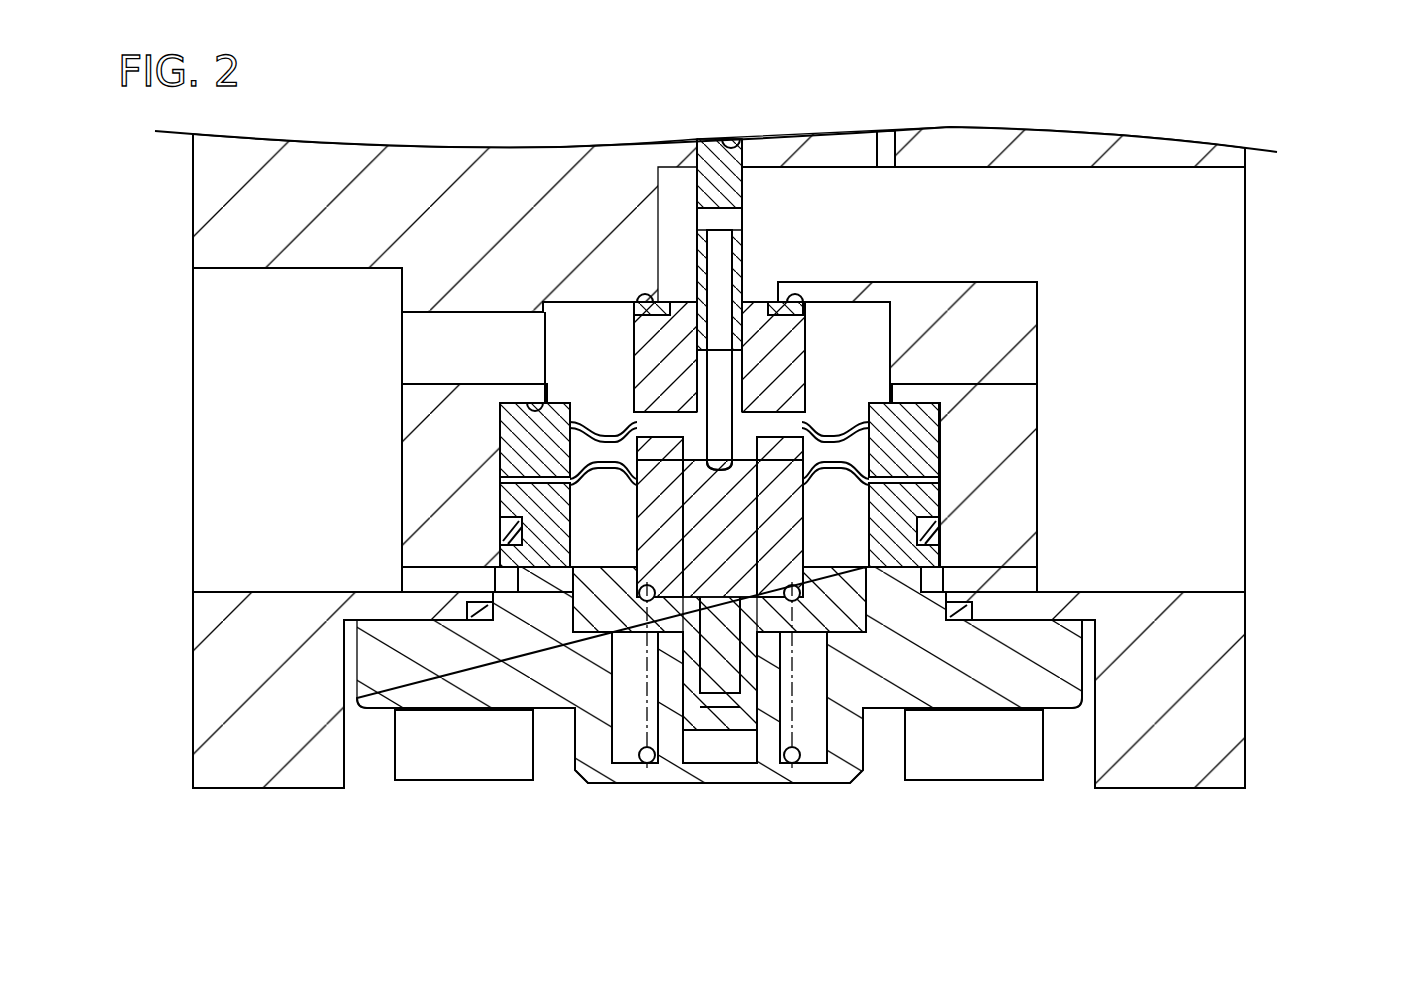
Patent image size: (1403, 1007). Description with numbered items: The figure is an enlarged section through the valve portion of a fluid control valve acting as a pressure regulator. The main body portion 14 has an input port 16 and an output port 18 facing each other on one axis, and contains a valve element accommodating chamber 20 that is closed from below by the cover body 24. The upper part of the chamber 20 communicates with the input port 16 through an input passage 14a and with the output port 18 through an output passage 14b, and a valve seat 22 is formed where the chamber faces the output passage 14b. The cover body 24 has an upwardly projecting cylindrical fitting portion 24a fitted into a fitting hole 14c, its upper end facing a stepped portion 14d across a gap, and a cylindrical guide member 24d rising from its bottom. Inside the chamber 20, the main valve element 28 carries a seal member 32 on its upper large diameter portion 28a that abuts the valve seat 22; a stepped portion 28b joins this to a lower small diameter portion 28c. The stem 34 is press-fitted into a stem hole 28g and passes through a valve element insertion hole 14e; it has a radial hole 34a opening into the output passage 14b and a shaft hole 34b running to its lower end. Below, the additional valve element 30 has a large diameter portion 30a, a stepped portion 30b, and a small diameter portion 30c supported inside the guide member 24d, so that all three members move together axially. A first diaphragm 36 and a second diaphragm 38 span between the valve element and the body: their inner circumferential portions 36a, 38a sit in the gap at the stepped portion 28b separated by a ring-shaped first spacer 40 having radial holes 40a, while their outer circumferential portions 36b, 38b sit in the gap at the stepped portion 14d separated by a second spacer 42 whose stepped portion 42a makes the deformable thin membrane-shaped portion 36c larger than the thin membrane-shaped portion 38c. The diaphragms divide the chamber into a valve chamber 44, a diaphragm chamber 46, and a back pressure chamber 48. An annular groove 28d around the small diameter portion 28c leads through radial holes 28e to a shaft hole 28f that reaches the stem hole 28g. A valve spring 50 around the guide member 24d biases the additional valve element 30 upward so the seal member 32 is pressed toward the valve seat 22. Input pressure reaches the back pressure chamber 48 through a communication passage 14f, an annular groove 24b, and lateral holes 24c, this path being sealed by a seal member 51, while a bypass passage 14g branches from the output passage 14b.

The main body portion 14 is at (1252, 214).
The input passage 14a is at (445, 343).
The output passage 14b is at (985, 193).
The fitting hole 14c is at (510, 452).
The stepped portion 14d is at (534, 405).
The valve element insertion hole 14e is at (722, 140).
The communication passage 14f is at (420, 579).
The bypass passage 14g is at (886, 150).
The input port 16 is at (230, 531).
The output port 18 is at (1225, 270).
The valve element accommodating chamber 20 is at (873, 389).
The valve seat 22 is at (785, 300).
The cover body 24 is at (460, 698).
The fitting portion 24a is at (548, 545).
The annular groove 24b is at (510, 582).
The lateral holes 24c is at (550, 582).
The guide member 24d is at (678, 738).
The main valve element 28 is at (810, 331).
The large diameter portion 28a is at (792, 345).
The stepped portion 28b is at (803, 407).
The small diameter portion 28c is at (803, 556).
The annular groove 28d is at (722, 478).
The radial holes 28e is at (740, 418).
The shaft hole 28f is at (722, 382).
The stem hole 28g is at (708, 325).
The additional valve element 30 is at (832, 597).
The large diameter portion 30a is at (648, 565).
The stepped portion 30b is at (677, 607).
The small diameter portion 30c is at (690, 677).
The seal member 32 is at (650, 305).
The stem 34 is at (736, 245).
The radial hole 34a is at (706, 217).
The shaft hole 34b is at (718, 256).
The first diaphragm 36 is at (941, 411).
The inner circumferential portion 36a is at (806, 418).
The outer circumferential portion 36b is at (938, 432).
The thin membrane-shaped portion 36c is at (928, 463).
The second diaphragm 38 is at (940, 493).
The inner circumferential portion 38a is at (790, 487).
The outer circumferential portion 38b is at (933, 517).
The thin membrane-shaped portion 38c is at (838, 473).
The first spacer 40 is at (615, 487).
The radial holes 40a is at (663, 462).
The second spacer 42 is at (508, 432).
The stepped portion 42a is at (560, 450).
The valve chamber 44 is at (565, 325).
The diaphragm chamber 46 is at (598, 430).
The back pressure chamber 48 is at (816, 622).
The valve spring 50 is at (647, 765).
The seal member 51 is at (475, 617).